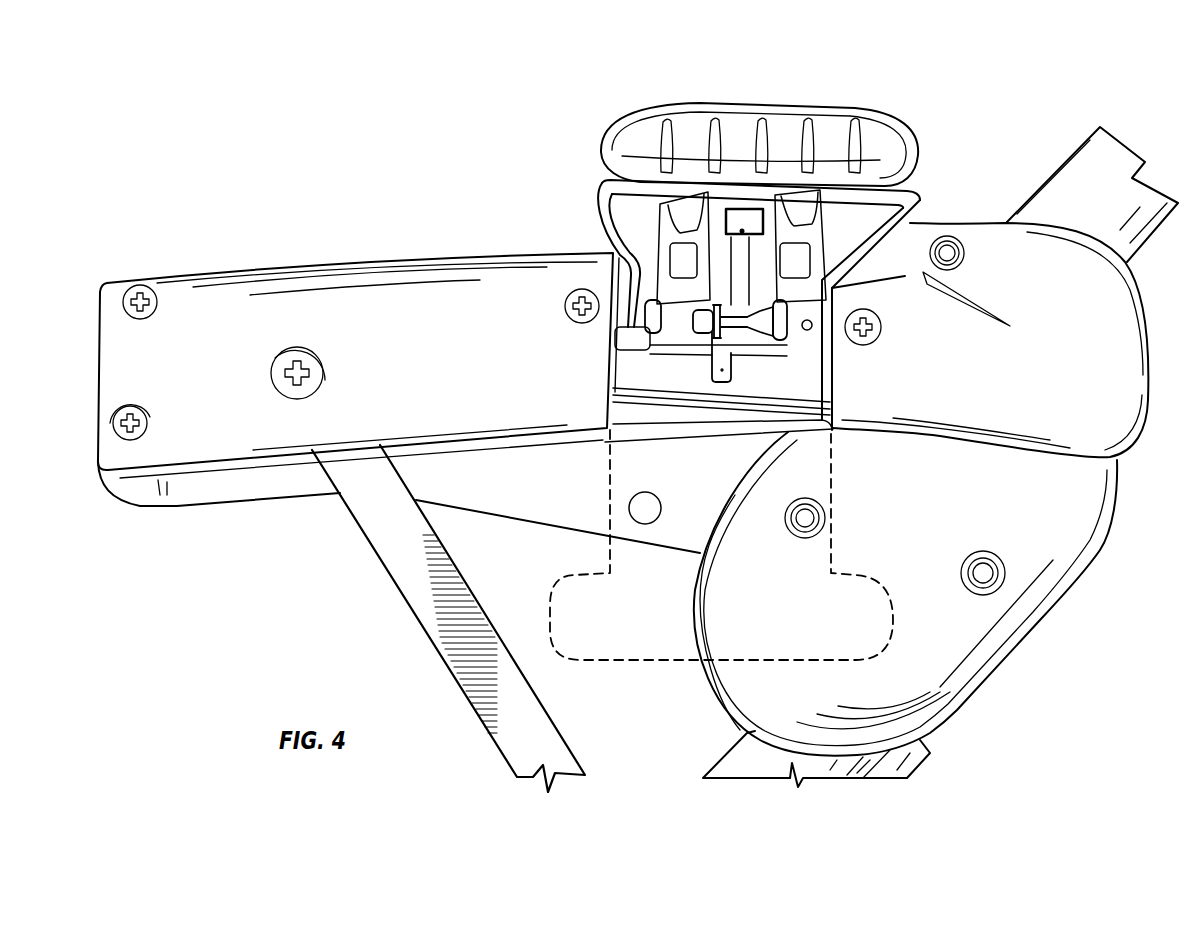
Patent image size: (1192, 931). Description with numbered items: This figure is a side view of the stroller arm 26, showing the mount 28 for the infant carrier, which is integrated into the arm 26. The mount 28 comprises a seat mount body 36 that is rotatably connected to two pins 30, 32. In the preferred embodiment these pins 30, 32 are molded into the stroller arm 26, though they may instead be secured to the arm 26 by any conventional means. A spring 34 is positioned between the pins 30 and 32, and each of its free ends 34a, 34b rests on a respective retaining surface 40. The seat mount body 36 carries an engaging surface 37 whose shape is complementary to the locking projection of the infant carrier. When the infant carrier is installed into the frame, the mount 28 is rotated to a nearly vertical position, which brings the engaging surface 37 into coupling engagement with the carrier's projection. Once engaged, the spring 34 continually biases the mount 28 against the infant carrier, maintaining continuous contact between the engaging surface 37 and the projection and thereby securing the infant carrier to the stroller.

The stroller arm 26 is at (318, 285).
The mount 28 is at (516, 237).
The pin 30 is at (653, 333).
The pin 32 is at (783, 330).
The spring 34 is at (710, 337).
The free end 34a is at (738, 229).
The free end 34b is at (711, 378).
The seat mount body 36 is at (930, 197).
The engaging surface 37 is at (876, 118).
The retaining surface 40 is at (742, 207).